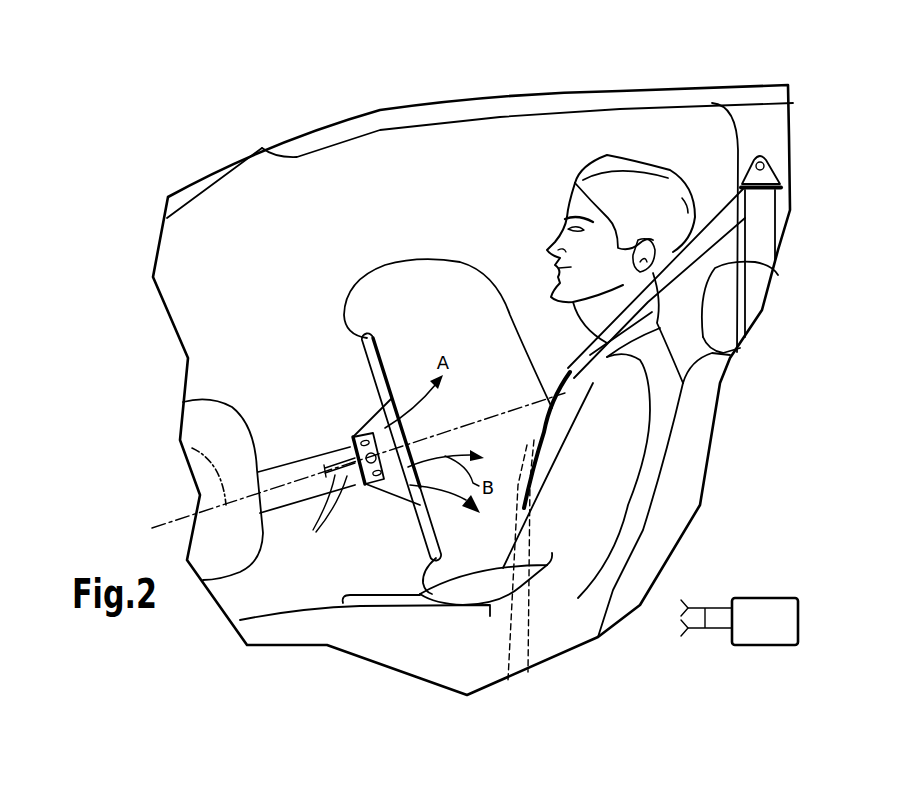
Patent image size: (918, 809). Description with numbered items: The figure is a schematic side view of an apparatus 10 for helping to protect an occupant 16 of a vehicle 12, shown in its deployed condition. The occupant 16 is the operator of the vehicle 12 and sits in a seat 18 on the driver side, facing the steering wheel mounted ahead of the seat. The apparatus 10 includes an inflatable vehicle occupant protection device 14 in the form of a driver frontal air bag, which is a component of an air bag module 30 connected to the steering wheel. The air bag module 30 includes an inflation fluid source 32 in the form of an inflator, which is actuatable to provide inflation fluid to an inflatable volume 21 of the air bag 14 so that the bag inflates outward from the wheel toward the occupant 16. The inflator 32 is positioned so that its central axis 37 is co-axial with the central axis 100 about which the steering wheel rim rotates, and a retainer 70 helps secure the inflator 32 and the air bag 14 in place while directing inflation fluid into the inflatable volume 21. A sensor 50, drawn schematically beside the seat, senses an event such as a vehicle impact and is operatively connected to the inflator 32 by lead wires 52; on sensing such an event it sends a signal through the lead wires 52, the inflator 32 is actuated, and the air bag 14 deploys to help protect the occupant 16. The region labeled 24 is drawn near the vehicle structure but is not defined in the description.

The apparatus 10 is at (199, 140).
The vehicle 12 is at (265, 100).
The inflatable vehicle occupant protection device 14 is at (440, 302).
The occupant 16 is at (630, 193).
The seat 18 is at (663, 527).
The inflatable volume 21 is at (431, 347).
The vehicle pillar 24 is at (157, 169).
The air bag module 30 is at (372, 503).
The inflation fluid source 32 is at (350, 452).
The central axis of the inflator 37 is at (487, 418).
The sensor 50 is at (773, 630).
The lead wires 52 is at (699, 660).
The retainer 70 is at (352, 437).
The central axis of the steering wheel 100 is at (178, 440).